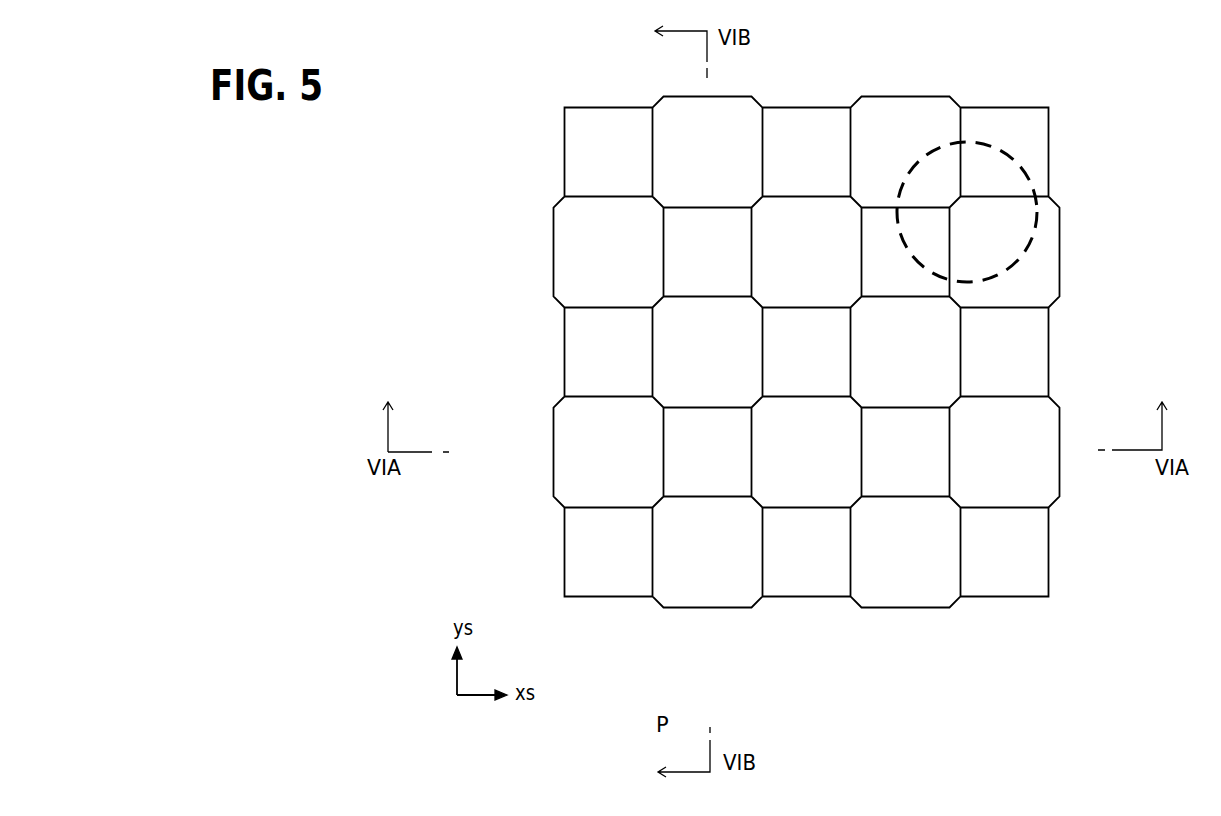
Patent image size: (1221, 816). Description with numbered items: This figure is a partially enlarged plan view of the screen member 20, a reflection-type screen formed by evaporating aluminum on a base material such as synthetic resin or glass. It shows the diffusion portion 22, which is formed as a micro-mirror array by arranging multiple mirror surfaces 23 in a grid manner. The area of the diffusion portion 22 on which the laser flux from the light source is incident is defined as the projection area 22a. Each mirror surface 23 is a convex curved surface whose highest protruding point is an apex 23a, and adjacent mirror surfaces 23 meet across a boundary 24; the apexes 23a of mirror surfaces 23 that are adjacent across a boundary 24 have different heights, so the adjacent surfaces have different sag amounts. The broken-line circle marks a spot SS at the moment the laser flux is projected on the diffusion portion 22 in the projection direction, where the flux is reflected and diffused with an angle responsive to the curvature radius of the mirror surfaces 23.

The screen member 20 is at (811, 329).
The diffusion portion 22 is at (811, 329).
The projection area 22a is at (916, 96).
The mirror surface 23 is at (715, 108).
The apex 23a is at (608, 450).
The boundary 24 is at (708, 295).
The spot SS is at (1038, 213).